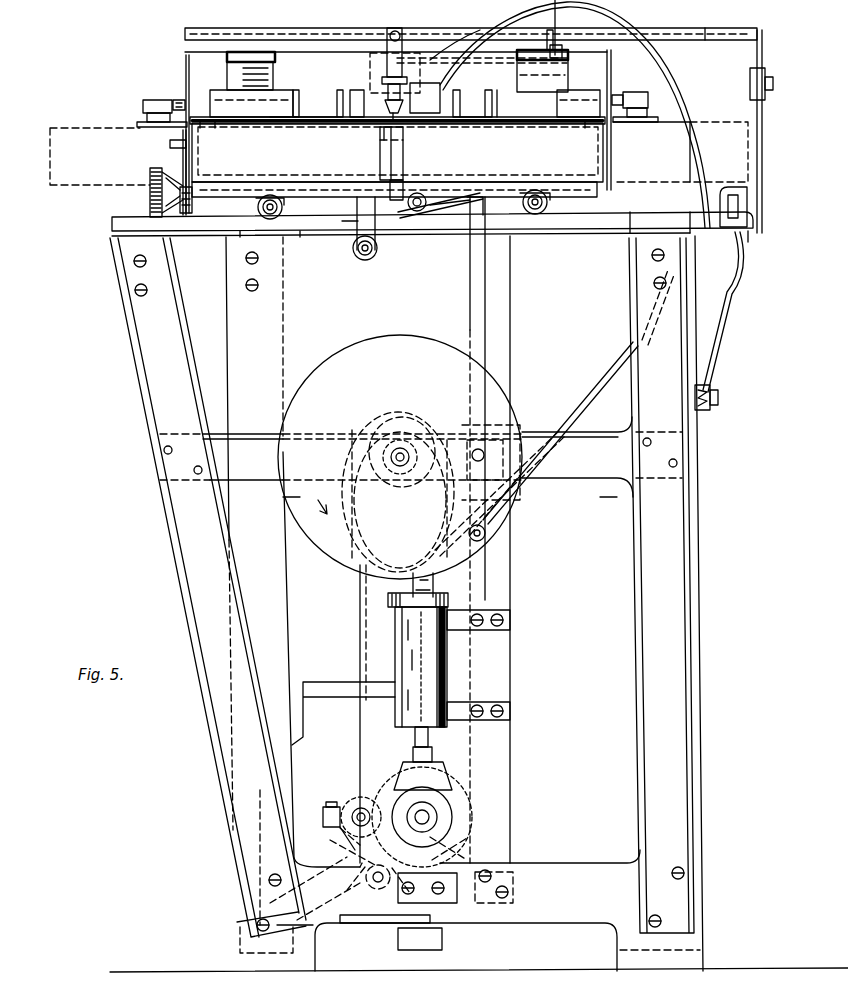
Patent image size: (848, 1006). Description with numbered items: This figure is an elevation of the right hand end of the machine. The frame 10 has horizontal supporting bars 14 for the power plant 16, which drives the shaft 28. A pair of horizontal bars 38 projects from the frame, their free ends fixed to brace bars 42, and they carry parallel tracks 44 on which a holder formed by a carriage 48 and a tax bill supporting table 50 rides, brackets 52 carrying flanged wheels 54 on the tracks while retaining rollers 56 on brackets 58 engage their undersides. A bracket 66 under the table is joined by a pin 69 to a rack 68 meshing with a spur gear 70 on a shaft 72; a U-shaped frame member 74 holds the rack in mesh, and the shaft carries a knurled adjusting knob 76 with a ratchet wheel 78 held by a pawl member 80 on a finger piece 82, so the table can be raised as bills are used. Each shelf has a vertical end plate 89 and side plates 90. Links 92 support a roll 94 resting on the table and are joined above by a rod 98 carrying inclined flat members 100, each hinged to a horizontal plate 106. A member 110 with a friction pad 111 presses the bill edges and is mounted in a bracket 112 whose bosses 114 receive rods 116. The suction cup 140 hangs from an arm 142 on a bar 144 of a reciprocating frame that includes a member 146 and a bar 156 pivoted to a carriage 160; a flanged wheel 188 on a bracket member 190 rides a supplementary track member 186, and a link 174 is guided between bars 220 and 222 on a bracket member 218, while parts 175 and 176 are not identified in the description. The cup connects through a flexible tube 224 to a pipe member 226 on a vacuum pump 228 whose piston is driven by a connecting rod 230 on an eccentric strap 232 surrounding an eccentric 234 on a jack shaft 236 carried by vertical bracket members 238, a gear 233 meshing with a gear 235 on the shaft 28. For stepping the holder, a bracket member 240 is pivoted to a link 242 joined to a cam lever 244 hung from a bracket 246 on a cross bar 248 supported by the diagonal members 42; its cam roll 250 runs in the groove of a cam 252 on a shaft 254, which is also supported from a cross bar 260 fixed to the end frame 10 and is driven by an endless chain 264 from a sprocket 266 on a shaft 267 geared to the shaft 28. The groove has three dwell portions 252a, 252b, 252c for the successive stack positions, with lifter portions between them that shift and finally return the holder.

The frame 10 is at (284, 351).
The horizontal supporting bars 14 is at (240, 946).
The power plant 16 is at (258, 833).
The shaft 28 is at (338, 824).
The horizontal parallel bars 38 is at (112, 238).
The brace bars 42 is at (190, 568).
The tracks 44 is at (304, 234).
The carriage 48 is at (250, 178).
The tax bill supporting table 50 is at (267, 117).
The brackets 52 is at (283, 207).
The flanged wheels 54 is at (262, 215).
The retaining rollers 56 is at (365, 260).
The brackets 58 is at (337, 219).
The bracket 66 is at (404, 140).
The rack 68 is at (404, 156).
The pin 69 is at (380, 142).
The spur gear 70 is at (415, 212).
The shaft 72 is at (316, 184).
The U-shaped frame member 74 is at (378, 230).
The knurled adjusting knob 76 is at (150, 203).
The ratchet wheel 78 is at (192, 206).
The pawl member 80 is at (182, 180).
The finger piece 82 is at (170, 144).
The vertical end plate 89 is at (228, 90).
The vertical side plates 90 is at (336, 100).
The links 92 is at (186, 78).
The roll 94 is at (300, 125).
The rod 98 is at (330, 31).
The inclined flat members 100 is at (251, 55).
The plate 106 is at (215, 88).
The member 110 is at (200, 124).
The friction pad 111 is at (216, 124).
The bracket 112 is at (150, 127).
The bosses 114 is at (143, 104).
The rods 116 is at (173, 103).
The suction cup 140 is at (400, 103).
The arm 142 is at (386, 43).
The bar 144 is at (442, 90).
The member 146 is at (708, 34).
The bar 156 is at (662, 52).
The carriage 160 is at (556, 40).
The link 174 is at (756, 60).
The clamp 175 is at (713, 392).
The bracket 176 is at (740, 188).
The supplementary track member 186 is at (500, 92).
The flanged wheel 188 is at (440, 75).
The bracket member 190 is at (524, 45).
The bracket member 218 is at (746, 243).
The bar 220 is at (748, 110).
The bar 222 is at (749, 92).
The flexible tube 224 is at (605, 385).
The pipe member 226 is at (433, 586).
The vacuum pump 228 is at (452, 672).
The connecting rod 230 is at (430, 740).
The eccentric strap 232 is at (447, 790).
The gear 233 is at (396, 782).
The eccentric 234 is at (440, 800).
The pinion 235 is at (346, 803).
The jack shaft 236 is at (437, 812).
The vertical bracket members 238 is at (410, 833).
The bracket member 240 is at (435, 200).
The link 242 is at (453, 207).
The cam lever 244 is at (488, 283).
The bracket 246 is at (505, 525).
The cross bar 248 is at (249, 440).
The cam roll 250 is at (520, 430).
The cam 252 is at (497, 393).
The dwell portion 252a is at (387, 417).
The dwell portion 252b is at (512, 415).
The dwell portion 252c is at (377, 507).
The shaft 254 is at (396, 453).
The cross bar 260 is at (605, 492).
The endless chain 264 is at (303, 735).
The sprocket 266 is at (456, 832).
The shaft 267 is at (378, 884).